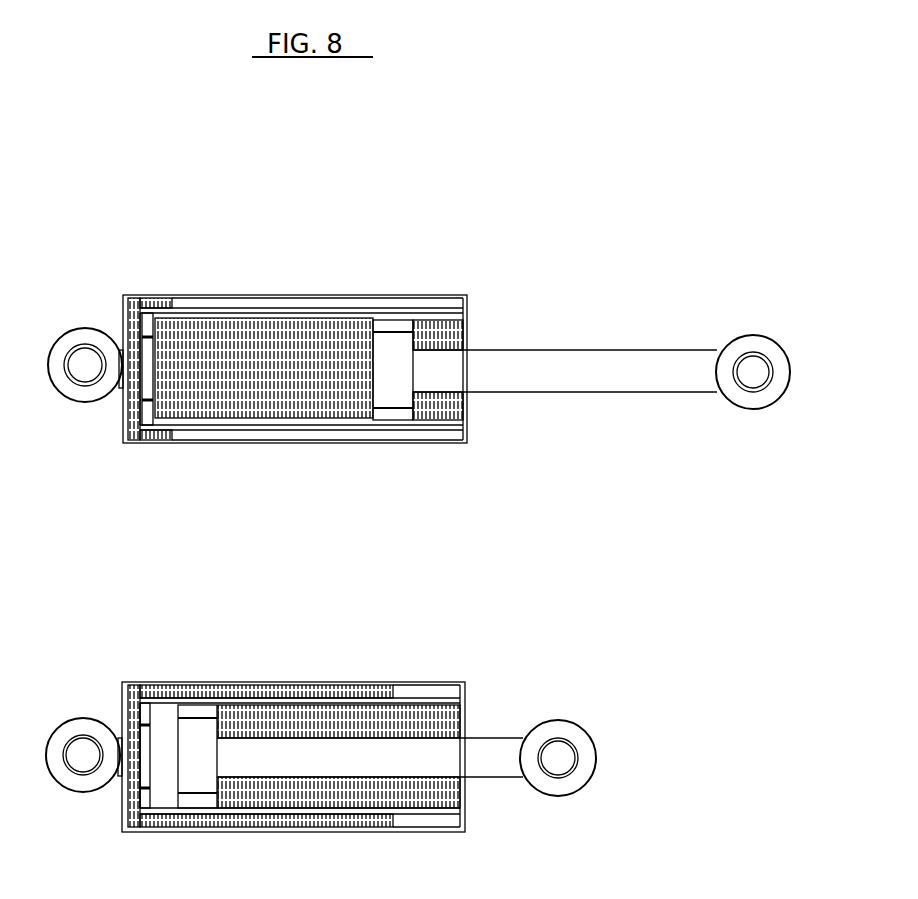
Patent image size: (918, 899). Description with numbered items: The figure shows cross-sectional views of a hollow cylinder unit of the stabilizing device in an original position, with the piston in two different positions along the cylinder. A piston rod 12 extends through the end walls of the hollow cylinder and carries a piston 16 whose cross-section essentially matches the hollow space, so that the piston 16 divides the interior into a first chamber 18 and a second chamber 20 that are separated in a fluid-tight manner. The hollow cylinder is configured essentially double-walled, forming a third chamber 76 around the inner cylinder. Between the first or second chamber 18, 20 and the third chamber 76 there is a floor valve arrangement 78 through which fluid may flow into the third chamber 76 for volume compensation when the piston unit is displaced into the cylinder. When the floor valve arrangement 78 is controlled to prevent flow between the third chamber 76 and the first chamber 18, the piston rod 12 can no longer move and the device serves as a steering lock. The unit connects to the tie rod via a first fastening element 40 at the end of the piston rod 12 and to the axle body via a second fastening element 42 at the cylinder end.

In FIG. 8a, the piston rod 12 is at (607, 380).
In FIG. 8b, the piston rod 12 is at (500, 743).
In FIG. 8a, the piston 16 is at (402, 395).
In FIG. 8b, the piston 16 is at (208, 732).
In FIG. 8a, the first chamber 18 is at (264, 368).
In FIG. 8a, the second chamber 20 is at (438, 370).
In FIG. 8b, the second chamber 20 is at (339, 756).
In FIG. 8a, the first fastening element 40 is at (760, 398).
In FIG. 8b, the first fastening element 40 is at (582, 728).
In FIG. 8a, the second fastening element 42 is at (63, 387).
In FIG. 8b, the second fastening element 42 is at (83, 725).
In FIG. 8a, the third chamber 76 is at (317, 433).
In FIG. 8b, the third chamber 76 is at (423, 692).
In FIG. 8a, the floor valve arrangement 78 is at (147, 402).
In FIG. 8b, the floor valve arrangement 78 is at (338, 748).